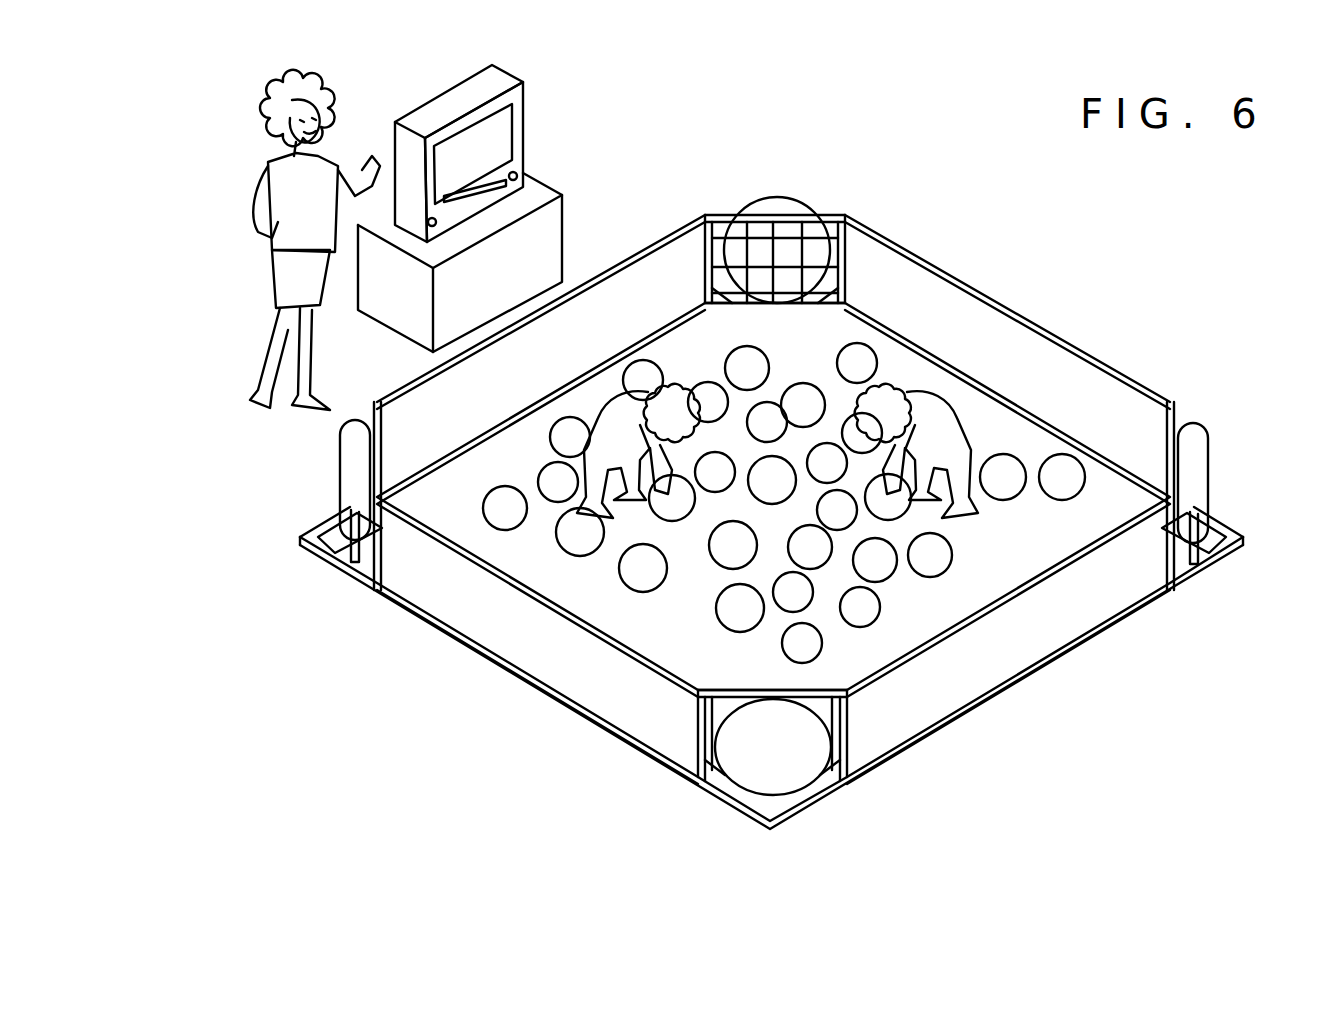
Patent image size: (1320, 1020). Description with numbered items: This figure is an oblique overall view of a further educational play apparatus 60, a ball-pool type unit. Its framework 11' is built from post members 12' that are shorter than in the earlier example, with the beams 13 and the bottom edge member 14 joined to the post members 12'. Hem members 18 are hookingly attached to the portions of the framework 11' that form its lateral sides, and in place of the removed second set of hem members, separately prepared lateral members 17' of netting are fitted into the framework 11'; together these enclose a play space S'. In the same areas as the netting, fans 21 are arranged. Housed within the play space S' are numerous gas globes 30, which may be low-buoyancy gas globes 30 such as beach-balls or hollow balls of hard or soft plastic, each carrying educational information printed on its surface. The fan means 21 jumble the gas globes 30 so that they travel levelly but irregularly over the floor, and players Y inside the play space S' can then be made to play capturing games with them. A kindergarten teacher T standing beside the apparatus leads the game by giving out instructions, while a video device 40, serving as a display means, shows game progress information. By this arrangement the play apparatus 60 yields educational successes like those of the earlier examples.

The framework 11' is at (774, 485).
The post members 12' is at (826, 739).
The beams 13 is at (910, 657).
The bottom edge member 14 is at (1053, 658).
The lateral members of netting 17' is at (753, 477).
The hem members 18 is at (655, 280).
The fans 21 is at (778, 196).
The gas globes 30 is at (872, 608).
The video device 40 is at (550, 132).
The play apparatus 60 is at (1270, 268).
The play space S' is at (773, 468).
The kindergarten teacher T is at (248, 162).
The players Y is at (977, 504).